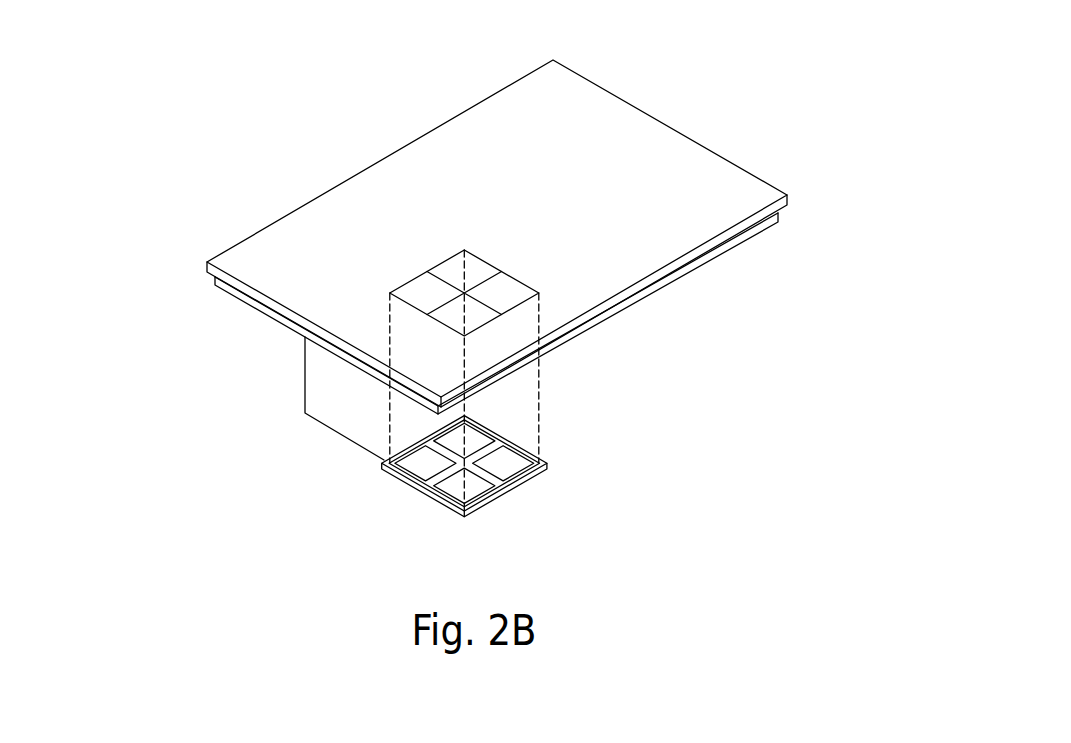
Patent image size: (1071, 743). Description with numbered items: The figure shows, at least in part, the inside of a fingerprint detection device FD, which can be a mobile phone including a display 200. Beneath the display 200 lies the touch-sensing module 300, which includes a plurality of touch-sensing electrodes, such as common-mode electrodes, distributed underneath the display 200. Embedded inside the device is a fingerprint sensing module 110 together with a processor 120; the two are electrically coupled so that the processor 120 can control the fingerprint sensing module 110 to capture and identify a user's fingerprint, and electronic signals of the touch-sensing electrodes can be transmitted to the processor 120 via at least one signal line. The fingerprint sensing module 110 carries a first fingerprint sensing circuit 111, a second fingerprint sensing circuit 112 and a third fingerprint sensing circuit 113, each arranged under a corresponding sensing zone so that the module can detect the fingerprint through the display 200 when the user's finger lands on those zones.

The fingerprint detection device FD is at (710, 88).
The fingerprint sensing module 110 is at (464, 478).
The first fingerprint sensing circuit 111 is at (418, 467).
The second fingerprint sensing circuit 112 is at (456, 494).
The third fingerprint sensing circuit 113 is at (473, 436).
The processor 120 is at (487, 504).
The display 200 is at (207, 263).
The touch-sensing module 300 is at (242, 298).